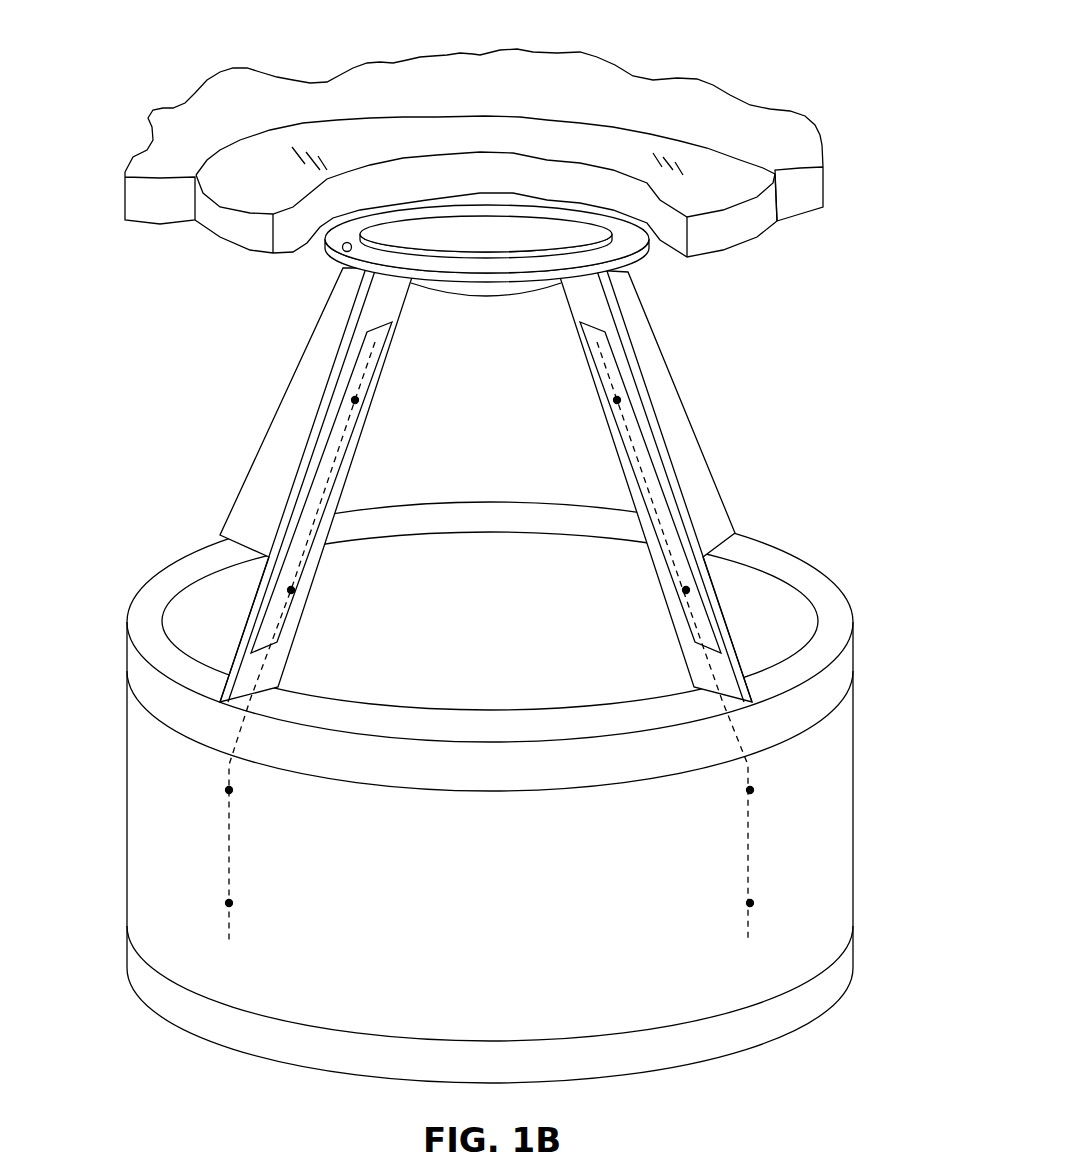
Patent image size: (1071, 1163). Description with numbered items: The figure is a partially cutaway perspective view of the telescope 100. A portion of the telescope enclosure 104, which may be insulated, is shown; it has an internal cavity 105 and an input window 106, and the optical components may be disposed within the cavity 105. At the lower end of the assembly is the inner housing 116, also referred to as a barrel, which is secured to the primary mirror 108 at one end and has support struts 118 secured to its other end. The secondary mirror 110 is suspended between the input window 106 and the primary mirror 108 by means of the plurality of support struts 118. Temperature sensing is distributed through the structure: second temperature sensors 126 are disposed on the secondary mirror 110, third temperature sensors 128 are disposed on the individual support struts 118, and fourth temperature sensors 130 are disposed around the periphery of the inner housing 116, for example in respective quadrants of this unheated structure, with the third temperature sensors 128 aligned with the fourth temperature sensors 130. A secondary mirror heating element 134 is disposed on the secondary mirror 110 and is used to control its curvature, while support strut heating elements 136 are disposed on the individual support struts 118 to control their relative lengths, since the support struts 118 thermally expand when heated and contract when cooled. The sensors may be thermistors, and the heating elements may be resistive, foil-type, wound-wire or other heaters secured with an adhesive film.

The telescope 100 is at (816, 62).
The telescope enclosure 104 is at (678, 74).
The internal cavity 105 is at (507, 678).
The input window 106 is at (753, 238).
The primary mirror 108 is at (197, 1031).
The secondary mirror 110 is at (470, 248).
The inner housing 116 is at (125, 770).
The support struts 118 is at (306, 360).
The second temperature sensors 126 is at (335, 251).
The third temperature sensors 128 is at (359, 401).
The fourth temperature sensors 130 is at (233, 790).
The secondary mirror heating element 134 is at (580, 237).
The support strut heating elements 136 is at (338, 459).